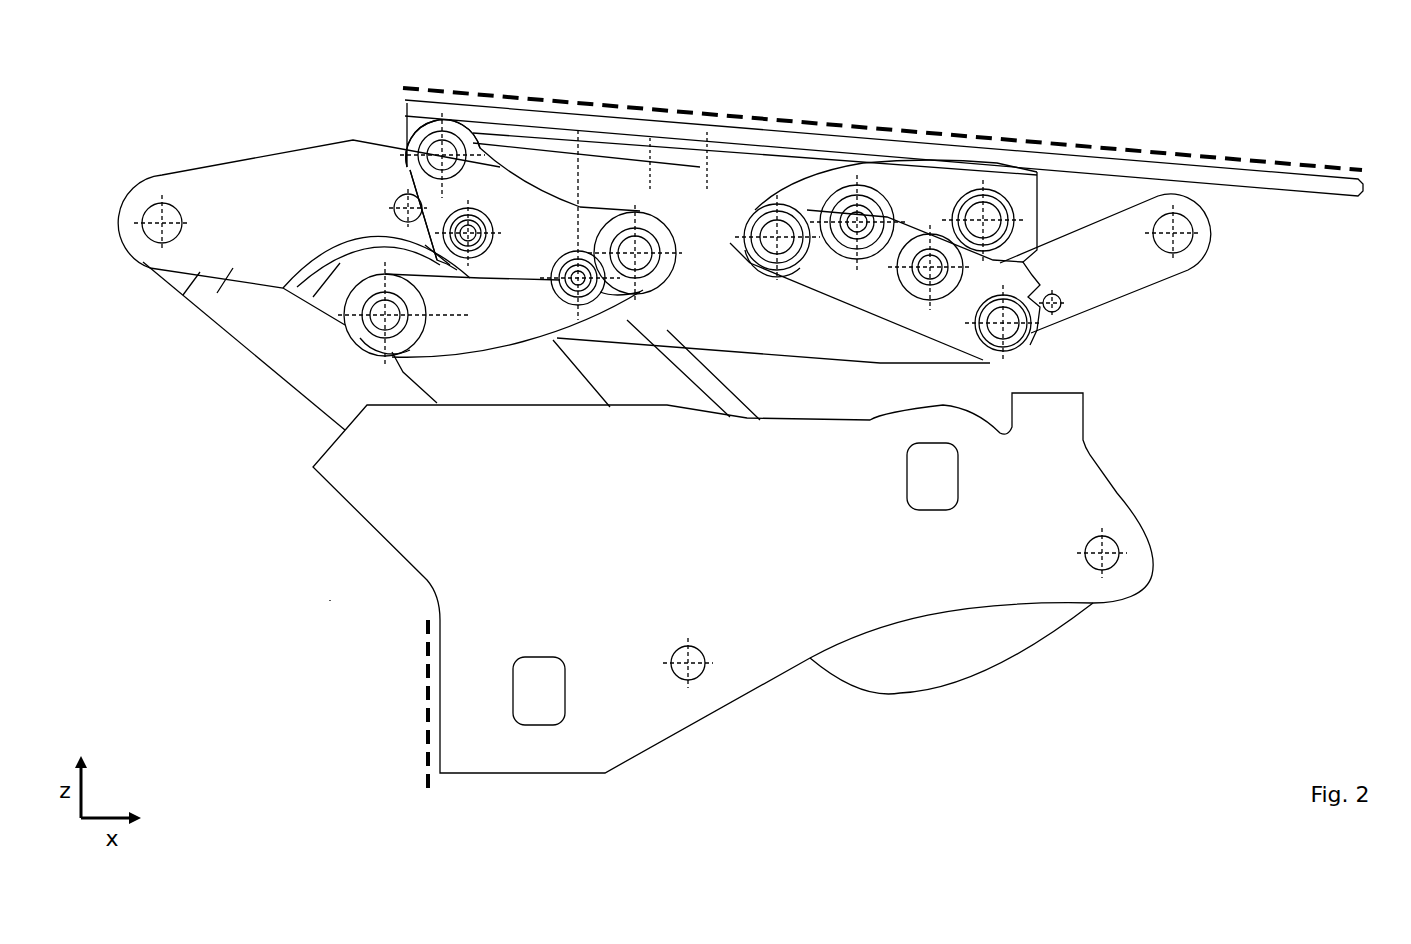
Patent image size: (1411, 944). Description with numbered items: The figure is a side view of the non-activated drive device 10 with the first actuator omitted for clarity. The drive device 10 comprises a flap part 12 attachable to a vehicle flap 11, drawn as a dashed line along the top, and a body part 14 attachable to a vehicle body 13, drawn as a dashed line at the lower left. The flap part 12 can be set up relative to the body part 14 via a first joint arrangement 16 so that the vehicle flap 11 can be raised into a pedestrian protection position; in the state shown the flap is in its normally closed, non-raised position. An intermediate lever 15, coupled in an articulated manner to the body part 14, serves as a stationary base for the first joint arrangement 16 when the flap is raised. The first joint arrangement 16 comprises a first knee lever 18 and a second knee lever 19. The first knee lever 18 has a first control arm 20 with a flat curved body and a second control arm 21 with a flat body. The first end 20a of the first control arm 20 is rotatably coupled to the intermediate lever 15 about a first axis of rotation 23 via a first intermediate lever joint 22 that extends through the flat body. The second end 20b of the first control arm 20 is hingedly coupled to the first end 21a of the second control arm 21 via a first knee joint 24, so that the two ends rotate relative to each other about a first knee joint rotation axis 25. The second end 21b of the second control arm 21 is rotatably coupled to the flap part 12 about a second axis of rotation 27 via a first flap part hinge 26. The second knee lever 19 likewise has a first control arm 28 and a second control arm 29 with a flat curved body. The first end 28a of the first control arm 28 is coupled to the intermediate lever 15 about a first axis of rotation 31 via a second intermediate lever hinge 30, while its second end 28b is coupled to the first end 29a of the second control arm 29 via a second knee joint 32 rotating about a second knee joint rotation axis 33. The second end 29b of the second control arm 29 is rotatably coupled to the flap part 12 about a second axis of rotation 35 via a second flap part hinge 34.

The drive device 10 is at (228, 116).
The vehicle flap 11 is at (1227, 160).
The flap part 12 is at (1283, 180).
The vehicle body 13 is at (428, 692).
The body part 14 is at (661, 556).
The intermediate lever 15 is at (1160, 267).
The first joint arrangement 16 is at (372, 346).
The first knee lever 18 is at (431, 194).
The second knee lever 19 is at (933, 190).
The first control arm 20 is at (473, 338).
The first end 20a is at (393, 350).
The second end 20b is at (625, 297).
The second control arm 21 is at (526, 245).
The first end 21a is at (650, 277).
The second end 21b is at (427, 130).
The first intermediate lever joint 22 is at (378, 321).
The first axis of rotation 23 is at (385, 313).
The first knee joint 24 is at (620, 247).
The first knee joint rotation axis 25 is at (637, 250).
The first flap part hinge 26 is at (457, 155).
The second axis of rotation 27 is at (443, 153).
The first control arm 28 is at (861, 306).
The first end 28a is at (1027, 343).
The second end 28b is at (768, 263).
The second control arm 29 is at (879, 196).
The first end 29a is at (780, 193).
The second end 29b is at (1010, 208).
The second intermediate lever hinge 30 is at (1010, 320).
The first axis of rotation 31 is at (997, 360).
The second knee joint 32 is at (790, 233).
The second knee joint rotation axis 33 is at (777, 233).
The second flap part hinge 34 is at (977, 213).
The second axis of rotation 35 is at (983, 223).